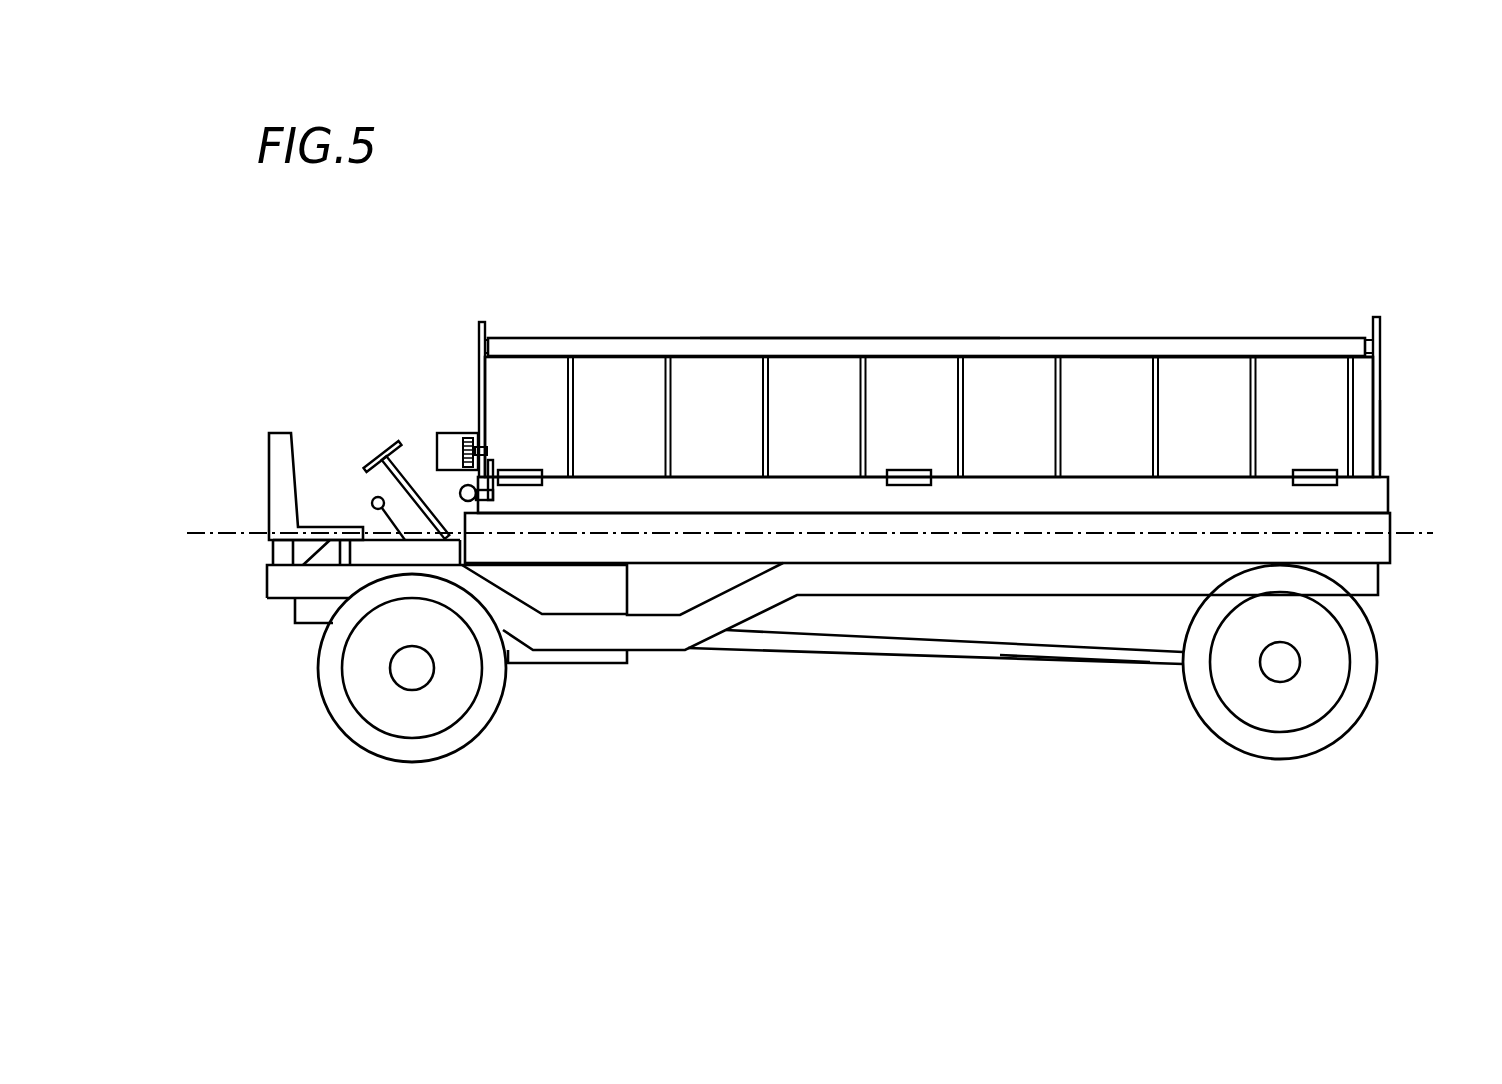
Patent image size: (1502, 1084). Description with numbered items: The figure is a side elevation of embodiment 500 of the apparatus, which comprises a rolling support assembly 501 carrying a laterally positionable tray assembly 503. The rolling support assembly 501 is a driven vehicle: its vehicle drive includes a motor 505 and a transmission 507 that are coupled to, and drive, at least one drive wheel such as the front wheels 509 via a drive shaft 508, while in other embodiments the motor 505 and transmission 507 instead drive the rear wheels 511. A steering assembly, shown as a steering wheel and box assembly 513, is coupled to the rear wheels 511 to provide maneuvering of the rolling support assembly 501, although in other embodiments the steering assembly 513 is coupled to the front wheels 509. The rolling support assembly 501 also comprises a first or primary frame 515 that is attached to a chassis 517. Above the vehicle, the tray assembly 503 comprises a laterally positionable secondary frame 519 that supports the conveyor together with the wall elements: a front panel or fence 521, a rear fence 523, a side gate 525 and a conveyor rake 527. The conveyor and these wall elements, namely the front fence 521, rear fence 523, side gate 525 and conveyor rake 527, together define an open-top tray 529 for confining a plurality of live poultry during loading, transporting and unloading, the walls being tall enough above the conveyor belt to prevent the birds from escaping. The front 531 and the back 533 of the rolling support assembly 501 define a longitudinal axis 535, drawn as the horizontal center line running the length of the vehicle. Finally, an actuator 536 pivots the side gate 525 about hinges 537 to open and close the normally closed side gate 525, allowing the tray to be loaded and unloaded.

The embodiment 500 is at (988, 222).
The rolling support assembly 501 is at (826, 666).
The laterally positionable tray assembly 503 is at (1194, 288).
The motor 505 is at (300, 625).
The transmission 507 is at (588, 664).
The drive shaft 508 is at (1072, 664).
The front wheels 509 is at (1373, 693).
The rear wheels 511 is at (480, 737).
The steering wheel and box assembly 513 is at (380, 453).
The primary frame 515 is at (1392, 548).
The chassis 517 is at (1034, 598).
The secondary frame 519 is at (1390, 485).
The front fence 521 is at (1382, 352).
The rear fence 523 is at (478, 365).
The side gate 525 is at (540, 356).
The conveyor rake 527 is at (708, 338).
The open-top tray 529 is at (823, 336).
The front 531 is at (1414, 385).
The back 533 is at (239, 461).
The longitudinal axis 535 is at (225, 531).
The actuator 536 is at (460, 493).
The hinges 537 is at (897, 470).